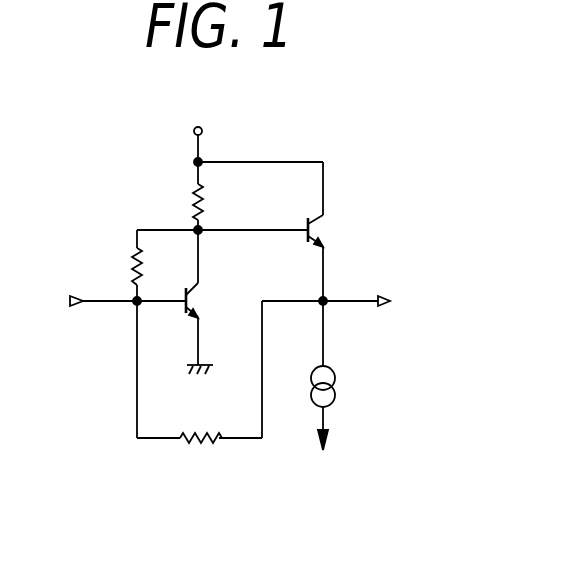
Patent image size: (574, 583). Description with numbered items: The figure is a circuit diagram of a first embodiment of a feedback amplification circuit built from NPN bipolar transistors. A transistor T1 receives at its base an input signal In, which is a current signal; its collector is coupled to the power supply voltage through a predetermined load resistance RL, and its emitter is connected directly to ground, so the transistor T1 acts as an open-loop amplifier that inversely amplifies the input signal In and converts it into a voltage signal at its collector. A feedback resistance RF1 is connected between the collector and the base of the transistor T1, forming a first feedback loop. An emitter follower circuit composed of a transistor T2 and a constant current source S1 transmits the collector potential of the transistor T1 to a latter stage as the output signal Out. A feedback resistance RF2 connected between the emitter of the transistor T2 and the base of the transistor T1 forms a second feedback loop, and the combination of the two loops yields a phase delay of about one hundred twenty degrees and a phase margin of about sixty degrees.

The load resistance RL is at (217, 201).
The feedback resistance RF1 is at (106, 266).
The feedback resistance RF2 is at (202, 459).
The transistor T1 is at (188, 300).
The transistor T2 is at (335, 231).
The constant current source S1 is at (342, 407).
The input signal In is at (87, 301).
The output signal Out is at (384, 302).